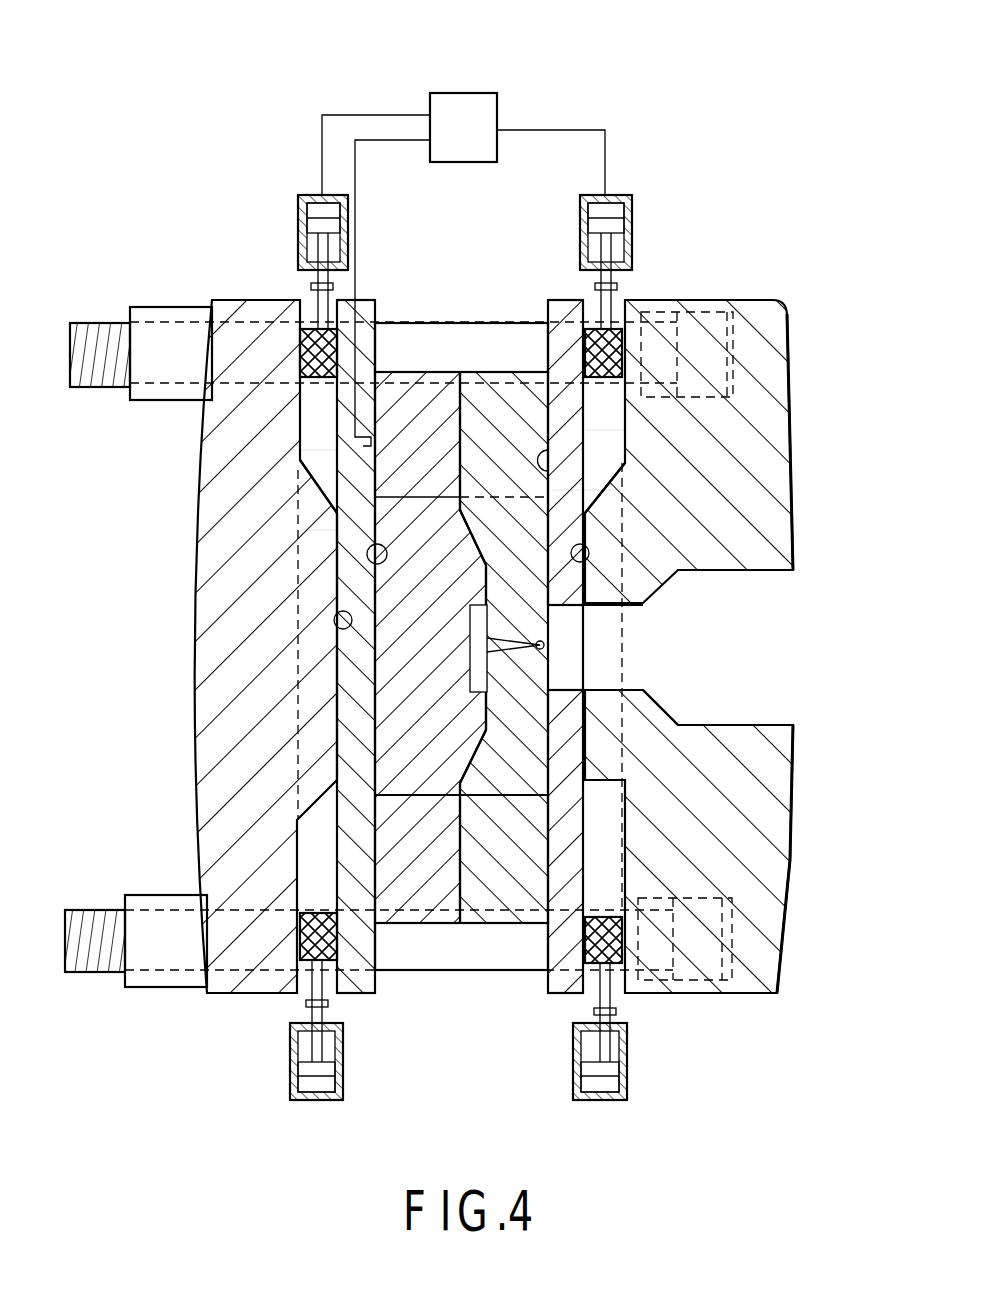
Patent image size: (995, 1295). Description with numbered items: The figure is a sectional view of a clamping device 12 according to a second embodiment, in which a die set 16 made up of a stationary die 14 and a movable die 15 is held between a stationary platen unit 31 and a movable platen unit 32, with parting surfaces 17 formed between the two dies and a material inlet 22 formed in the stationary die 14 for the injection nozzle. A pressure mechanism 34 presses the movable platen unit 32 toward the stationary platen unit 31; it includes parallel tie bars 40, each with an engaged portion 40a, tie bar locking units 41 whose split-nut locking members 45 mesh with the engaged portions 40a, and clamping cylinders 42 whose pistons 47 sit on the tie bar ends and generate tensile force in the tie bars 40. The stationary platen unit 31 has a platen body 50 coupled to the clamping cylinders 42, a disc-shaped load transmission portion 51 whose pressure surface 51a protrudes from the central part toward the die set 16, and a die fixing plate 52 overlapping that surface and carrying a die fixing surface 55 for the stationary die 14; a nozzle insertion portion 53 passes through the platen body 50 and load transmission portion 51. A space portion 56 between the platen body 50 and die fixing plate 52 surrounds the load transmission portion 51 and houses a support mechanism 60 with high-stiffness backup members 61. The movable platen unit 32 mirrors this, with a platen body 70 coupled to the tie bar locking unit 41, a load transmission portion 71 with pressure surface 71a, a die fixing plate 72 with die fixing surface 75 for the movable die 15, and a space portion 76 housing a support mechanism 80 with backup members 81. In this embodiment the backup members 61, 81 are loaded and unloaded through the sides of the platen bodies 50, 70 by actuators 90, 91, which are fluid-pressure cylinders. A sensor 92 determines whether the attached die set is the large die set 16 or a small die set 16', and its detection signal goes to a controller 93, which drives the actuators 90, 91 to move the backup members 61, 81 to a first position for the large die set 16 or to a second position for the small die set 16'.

The clamping device 12 is at (697, 136).
The stationary die 14 is at (503, 395).
The movable die 15 is at (420, 395).
The die set 16 is at (461, 349).
The small die set 16' is at (461, 935).
The parting surfaces 17 is at (470, 820).
The material inlet 22 is at (547, 648).
The stationary platen unit 31 is at (670, 278).
The movable platen unit 32 is at (230, 272).
The pressure mechanism 34 is at (403, 312).
The tie bars 40 is at (520, 330).
The engaged portion 40a is at (105, 325).
The tie bar locking unit 41 is at (135, 270).
The clamping cylinders 42 is at (672, 300).
The locking member 45 is at (185, 330).
The piston 47 is at (713, 350).
The platen body 50 is at (743, 835).
The load transmission portion 51 is at (610, 510).
The pressure surface 51a is at (583, 533).
The die fixing plate 52 is at (583, 742).
The nozzle insertion portion 53 is at (735, 725).
The die fixing surface 55 is at (553, 490).
The space portion 56 is at (605, 430).
The support mechanism 60 is at (619, 182).
The backup members 61 is at (596, 325).
The platen body 70 is at (240, 770).
The load transmission portion 71 is at (313, 573).
The pressure surface 71a is at (337, 603).
The die fixing plate 72 is at (347, 682).
The die fixing surface 75 is at (313, 537).
The space portion 76 is at (313, 450).
The support mechanism 80 is at (302, 182).
The backup members 81 is at (309, 325).
The actuator 90 is at (635, 228).
The actuator 91 is at (297, 235).
The sensor 92 is at (360, 447).
The controller 93 is at (463, 93).